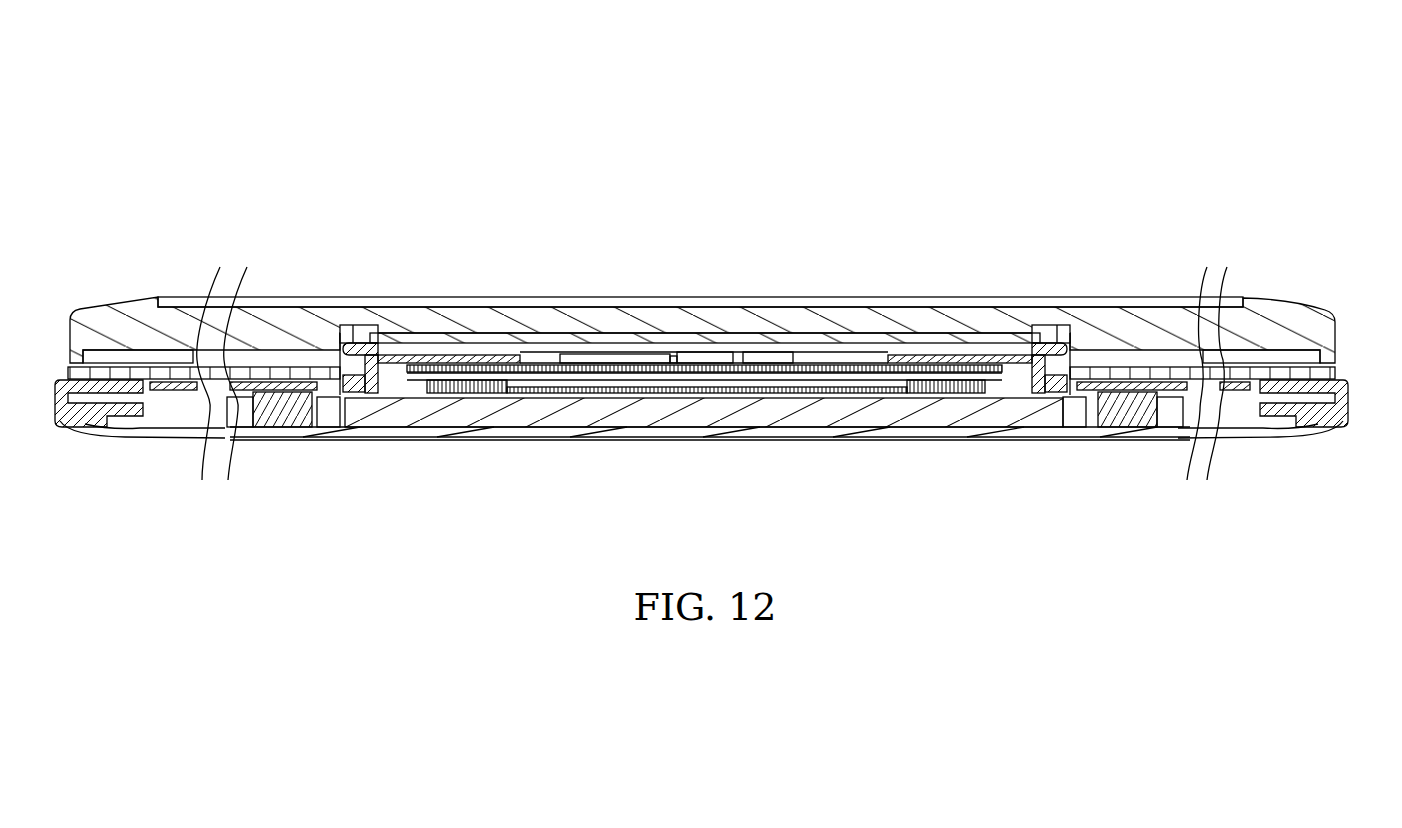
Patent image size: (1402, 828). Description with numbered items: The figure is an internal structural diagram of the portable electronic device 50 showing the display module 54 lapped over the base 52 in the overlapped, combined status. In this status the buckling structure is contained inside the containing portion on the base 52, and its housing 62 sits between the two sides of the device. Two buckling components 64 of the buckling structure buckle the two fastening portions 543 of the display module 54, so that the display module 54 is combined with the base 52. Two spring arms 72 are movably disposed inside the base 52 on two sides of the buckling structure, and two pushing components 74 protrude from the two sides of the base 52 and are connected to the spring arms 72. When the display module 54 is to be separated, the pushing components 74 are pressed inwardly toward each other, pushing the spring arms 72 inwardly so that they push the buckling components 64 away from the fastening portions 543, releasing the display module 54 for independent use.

The portable electronic device 50 is at (1152, 158).
The base 52 is at (1178, 432).
The display module 54 is at (1266, 312).
The fastening portion 543 is at (362, 328).
The housing 62 is at (690, 337).
The buckling component 64 is at (338, 395).
The spring arm 72 is at (312, 426).
The pushing component 74 is at (62, 428).